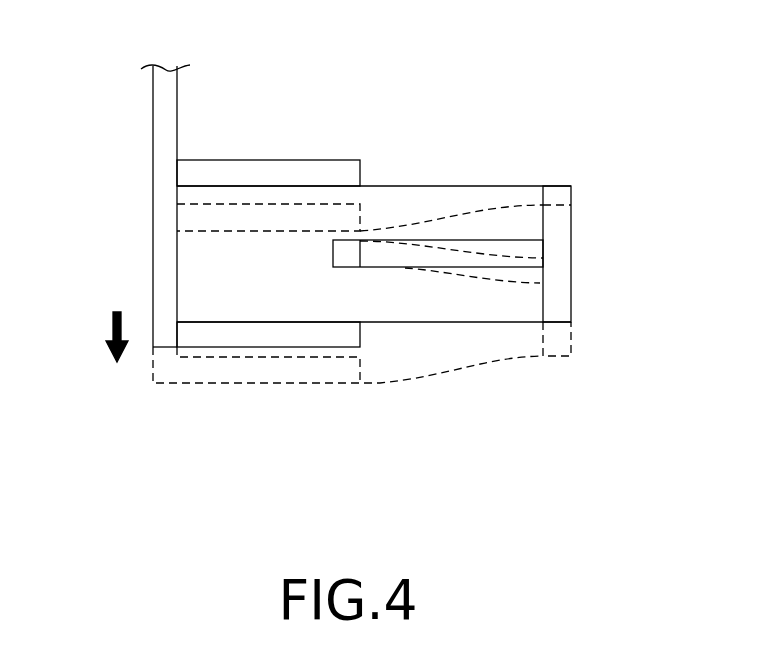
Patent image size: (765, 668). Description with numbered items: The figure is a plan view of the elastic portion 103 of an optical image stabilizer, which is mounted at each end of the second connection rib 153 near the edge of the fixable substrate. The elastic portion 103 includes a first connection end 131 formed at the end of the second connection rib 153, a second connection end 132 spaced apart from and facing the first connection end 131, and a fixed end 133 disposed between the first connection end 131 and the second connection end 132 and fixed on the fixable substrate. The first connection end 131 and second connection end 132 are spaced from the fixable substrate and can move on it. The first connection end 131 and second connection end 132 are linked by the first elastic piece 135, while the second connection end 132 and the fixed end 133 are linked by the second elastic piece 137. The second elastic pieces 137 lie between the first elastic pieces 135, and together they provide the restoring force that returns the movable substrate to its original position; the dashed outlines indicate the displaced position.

The elastic portion 103 is at (351, 32).
The first connection end 131 is at (276, 168).
The second connection end 132 is at (562, 253).
The fixed end 133 is at (345, 255).
The first elastic piece 135 is at (450, 186).
The second elastic piece 137 is at (508, 238).
The second connection rib 153 is at (162, 106).